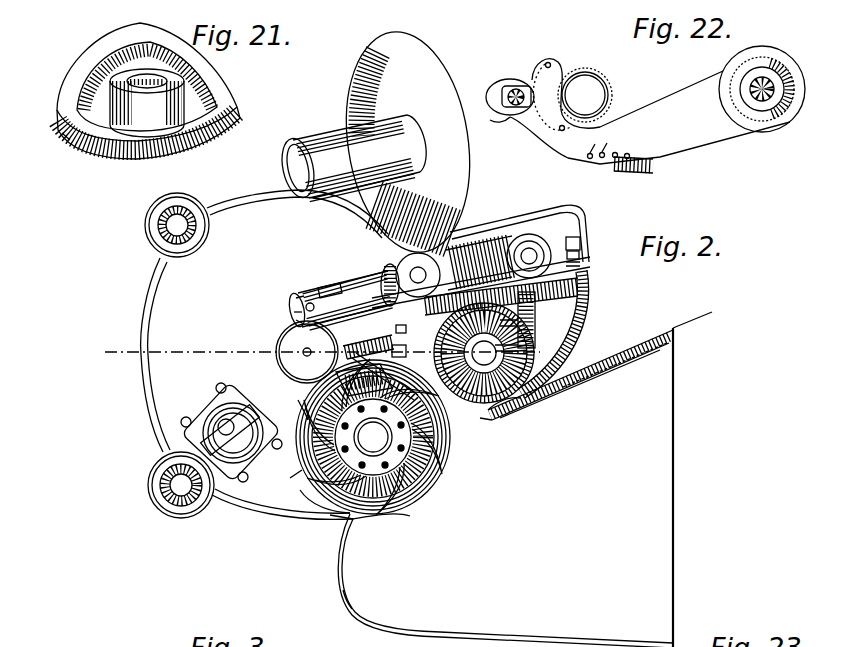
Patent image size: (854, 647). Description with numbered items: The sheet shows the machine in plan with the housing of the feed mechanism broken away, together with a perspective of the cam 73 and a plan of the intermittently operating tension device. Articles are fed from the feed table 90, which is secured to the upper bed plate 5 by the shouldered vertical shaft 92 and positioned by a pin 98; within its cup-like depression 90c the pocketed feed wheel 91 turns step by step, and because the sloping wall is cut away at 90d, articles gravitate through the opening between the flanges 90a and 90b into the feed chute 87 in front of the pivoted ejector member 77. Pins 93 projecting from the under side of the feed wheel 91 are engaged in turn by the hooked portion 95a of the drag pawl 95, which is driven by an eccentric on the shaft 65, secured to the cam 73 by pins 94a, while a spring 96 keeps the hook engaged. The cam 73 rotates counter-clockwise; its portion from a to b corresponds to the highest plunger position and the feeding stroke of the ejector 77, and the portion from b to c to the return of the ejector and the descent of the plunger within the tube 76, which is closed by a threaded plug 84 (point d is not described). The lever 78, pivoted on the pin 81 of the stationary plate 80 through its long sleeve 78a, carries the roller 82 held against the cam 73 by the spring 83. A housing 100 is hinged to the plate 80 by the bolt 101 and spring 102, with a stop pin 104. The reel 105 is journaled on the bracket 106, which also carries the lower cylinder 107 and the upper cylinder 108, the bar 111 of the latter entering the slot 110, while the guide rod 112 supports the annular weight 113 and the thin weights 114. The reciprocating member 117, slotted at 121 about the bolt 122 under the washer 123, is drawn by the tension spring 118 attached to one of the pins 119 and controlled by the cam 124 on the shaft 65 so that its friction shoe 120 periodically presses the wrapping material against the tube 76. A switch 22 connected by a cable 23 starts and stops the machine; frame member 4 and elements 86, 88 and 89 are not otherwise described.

In FIG. 21, the cam 73 is at (148, 95).
In FIG. 2, the cam 73 is at (562, 388).
In FIG. 21, the cam point a is at (63, 143).
In FIG. 21, the cam point b is at (150, 24).
In FIG. 21, the cam point c is at (237, 107).
In FIG. 21, the reference line d is at (238, 110).
In FIG. 22, the reciprocating member 117 is at (663, 103).
In FIG. 22, the bolt 122 is at (512, 89).
In FIG. 22, the slot 121 is at (541, 72).
In FIG. 22, the friction shoe 120 is at (568, 76).
In FIG. 22, the tube 76 is at (608, 97).
In FIG. 22, the cam 124 is at (742, 78).
In FIG. 22, the shaft 65 is at (750, 95).
In FIG. 2, the shaft 65 is at (504, 358).
In FIG. 22, the tension spring 118 is at (654, 168).
In FIG. 22, the pins 119 is at (612, 144).
In FIG. 22, the washer 123 is at (520, 122).
In FIG. 2, the upper bed plate 5 is at (163, 318).
In FIG. 2, the frame member 4 is at (400, 333).
In FIG. 2, the reel 105 is at (380, 141).
In FIG. 2, the bracket 106 is at (524, 222).
In FIG. 2, the weights 114 is at (518, 251).
In FIG. 2, the annular weight 113 is at (378, 272).
In FIG. 2, the guide rod 112 is at (536, 249).
In FIG. 2, the bolt 101 is at (579, 238).
In FIG. 2, the spring 102 is at (580, 253).
In FIG. 2, the stationary plate 80 is at (592, 264).
In FIG. 2, the spring 83 is at (575, 293).
In FIG. 2, the roller 82 is at (535, 316).
In FIG. 2, the sleeve 78a is at (535, 330).
In FIG. 2, the pivot pin 81 is at (535, 346).
In FIG. 2, the housing 100 is at (590, 330).
In FIG. 2, the pin 104 is at (339, 299).
In FIG. 2, the upper cylinder 108 is at (308, 297).
In FIG. 2, the lower cylinder 107 is at (298, 302).
In FIG. 2, the slot 110 is at (294, 311).
In FIG. 2, the bar 111 is at (295, 319).
In FIG. 2, the threaded plug 84 is at (278, 346).
In FIG. 2, the lever 78 is at (307, 352).
In FIG. 2, the ejector member 77 is at (338, 354).
In FIG. 2, the collar 88 is at (381, 285).
In FIG. 2, the plate 89 is at (365, 365).
In FIG. 2, the block 86 is at (406, 355).
In FIG. 2, the feed chute 87 is at (406, 332).
In FIG. 2, the drag pawl 95 is at (386, 376).
In FIG. 2, the cable 23 is at (425, 402).
In FIG. 2, the pins 93 is at (440, 449).
In FIG. 2, the vertical shaft 92 is at (436, 468).
In FIG. 2, the feed wheel 91 is at (426, 486).
In FIG. 2, the depression 90c is at (316, 490).
In FIG. 2, the hooked portion 95a is at (290, 480).
In FIG. 2, the cut-away 90d is at (305, 412).
In FIG. 2, the switch 22 is at (225, 432).
In FIG. 2, the pin 98 is at (322, 530).
In FIG. 2, the feed table 90 is at (675, 490).
In FIG. 2, the flange 90a is at (345, 608).
In FIG. 2, the flange 90b is at (677, 333).
In FIG. 2, the spring 96 is at (598, 382).
In FIG. 2, the pins 94a is at (500, 408).